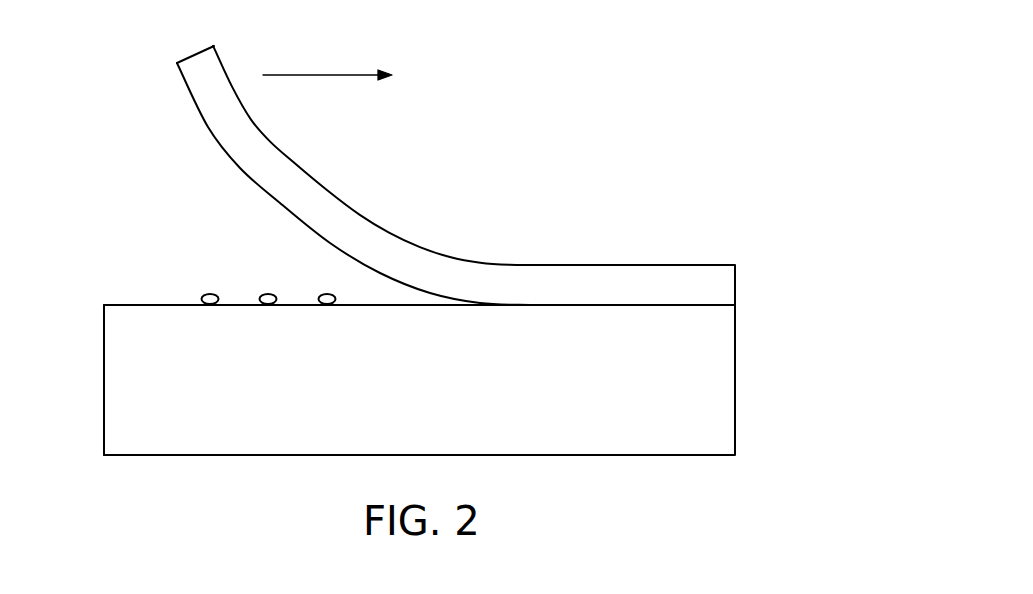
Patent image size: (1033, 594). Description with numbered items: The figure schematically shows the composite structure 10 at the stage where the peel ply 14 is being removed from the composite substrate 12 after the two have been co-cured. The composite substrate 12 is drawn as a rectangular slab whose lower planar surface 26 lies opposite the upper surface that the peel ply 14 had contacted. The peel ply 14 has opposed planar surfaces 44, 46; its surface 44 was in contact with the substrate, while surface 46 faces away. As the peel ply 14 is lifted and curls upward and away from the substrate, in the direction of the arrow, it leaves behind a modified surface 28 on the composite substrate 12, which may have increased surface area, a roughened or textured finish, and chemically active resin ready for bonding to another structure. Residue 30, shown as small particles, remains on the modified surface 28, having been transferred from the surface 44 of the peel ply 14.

The composite structure 10 is at (715, 235).
The composite substrate 12 is at (737, 377).
The peel ply 14 is at (737, 287).
The planar surface 26 is at (148, 457).
The modified surface 28 is at (133, 303).
The residue 30 is at (208, 294).
The planar surface of peel ply 44 is at (207, 129).
The planar surface of peel ply 46 is at (266, 136).